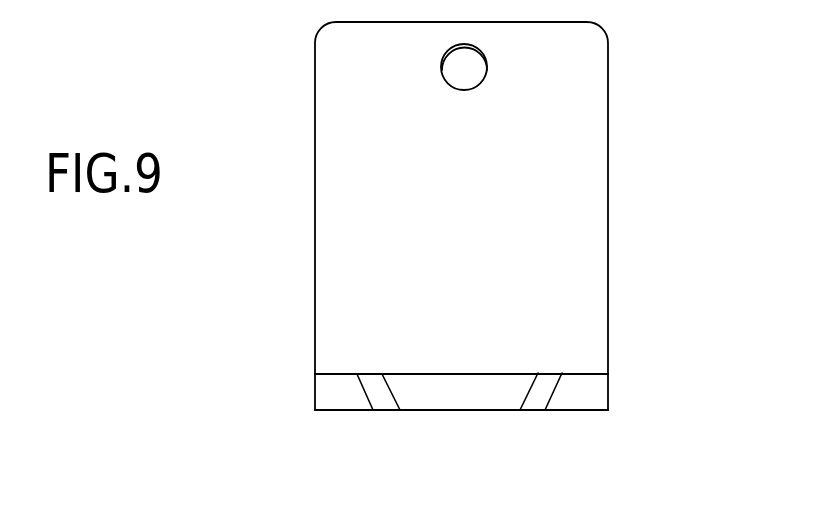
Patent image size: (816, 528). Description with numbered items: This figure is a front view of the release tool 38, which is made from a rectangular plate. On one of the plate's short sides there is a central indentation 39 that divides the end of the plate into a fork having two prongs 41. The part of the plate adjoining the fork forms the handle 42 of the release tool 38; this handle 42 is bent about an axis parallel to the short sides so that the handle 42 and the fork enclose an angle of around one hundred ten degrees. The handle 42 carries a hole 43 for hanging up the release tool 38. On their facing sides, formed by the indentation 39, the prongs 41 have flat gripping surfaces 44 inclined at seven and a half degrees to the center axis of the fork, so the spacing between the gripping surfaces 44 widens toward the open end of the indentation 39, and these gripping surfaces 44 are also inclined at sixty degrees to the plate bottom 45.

The release tool 38 is at (608, 209).
The central indentation 39 is at (430, 382).
The prongs 41 is at (320, 397).
The handle 42 is at (587, 138).
The hole 43 is at (473, 78).
The gripping surfaces 44 is at (378, 397).
The plate bottom 45 is at (572, 410).